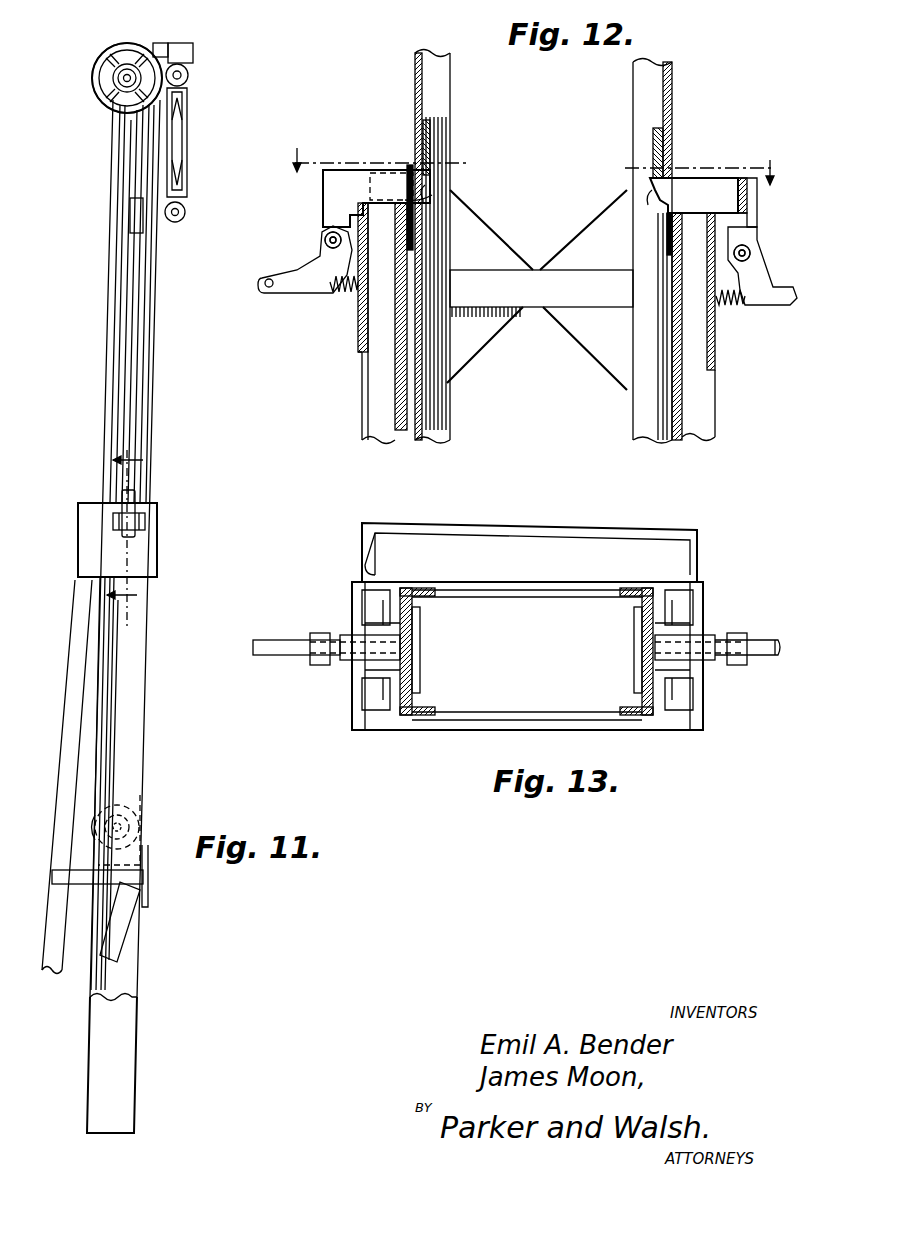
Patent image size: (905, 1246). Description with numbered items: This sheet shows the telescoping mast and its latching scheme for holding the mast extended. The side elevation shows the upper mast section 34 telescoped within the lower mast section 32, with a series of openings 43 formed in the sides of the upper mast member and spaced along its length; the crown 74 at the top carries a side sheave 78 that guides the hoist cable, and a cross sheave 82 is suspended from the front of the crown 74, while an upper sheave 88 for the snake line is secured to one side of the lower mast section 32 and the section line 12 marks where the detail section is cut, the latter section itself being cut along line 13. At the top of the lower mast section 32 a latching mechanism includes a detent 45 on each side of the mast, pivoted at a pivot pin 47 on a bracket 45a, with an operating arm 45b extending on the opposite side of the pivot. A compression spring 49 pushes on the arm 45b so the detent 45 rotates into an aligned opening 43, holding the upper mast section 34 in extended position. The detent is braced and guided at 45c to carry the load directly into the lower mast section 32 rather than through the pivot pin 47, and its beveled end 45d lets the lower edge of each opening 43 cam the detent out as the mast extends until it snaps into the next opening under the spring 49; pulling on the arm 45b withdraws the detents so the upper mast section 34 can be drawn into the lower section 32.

In FIG. 11, the frame 12 is at (125, 531).
In FIG. 12, the section line 13— 13 is at (539, 154).
In FIG. 11, the lower mast section 32 is at (78, 708).
In FIG. 12, the lower mast section 32 is at (375, 408).
In FIG. 13, the lower mast section 32 is at (352, 690).
In FIG. 11, the upper mast section 34 is at (148, 315).
In FIG. 12, the upper mast section 34 is at (415, 78).
In FIG. 13, the upper mast section 34 is at (420, 670).
In FIG. 11, the openings 43 is at (130, 208).
In FIG. 12, the openings 43 is at (422, 210).
In FIG. 11, the detent 45 is at (130, 490).
In FIG. 12, the detent 45 is at (360, 180).
In FIG. 13, the detent 45 is at (415, 655).
In FIG. 12, the bracket 45a is at (348, 224).
In FIG. 12, the operating arm 45b is at (283, 293).
In FIG. 13, the operating arm 45b is at (278, 628).
In FIG. 12, the brace and guide 45c is at (438, 198).
In FIG. 12, the beveled end 45d is at (432, 180).
In FIG. 11, the pivot pin 47 is at (146, 522).
In FIG. 12, the pivot pin 47 is at (325, 240).
In FIG. 12, the compression spring 49 is at (342, 296).
In FIG. 11, the crown 74 is at (95, 103).
In FIG. 11, the side sheave 78 is at (106, 56).
In FIG. 11, the cross sheave 82 is at (188, 143).
In FIG. 11, the upper sheave 88 is at (138, 800).